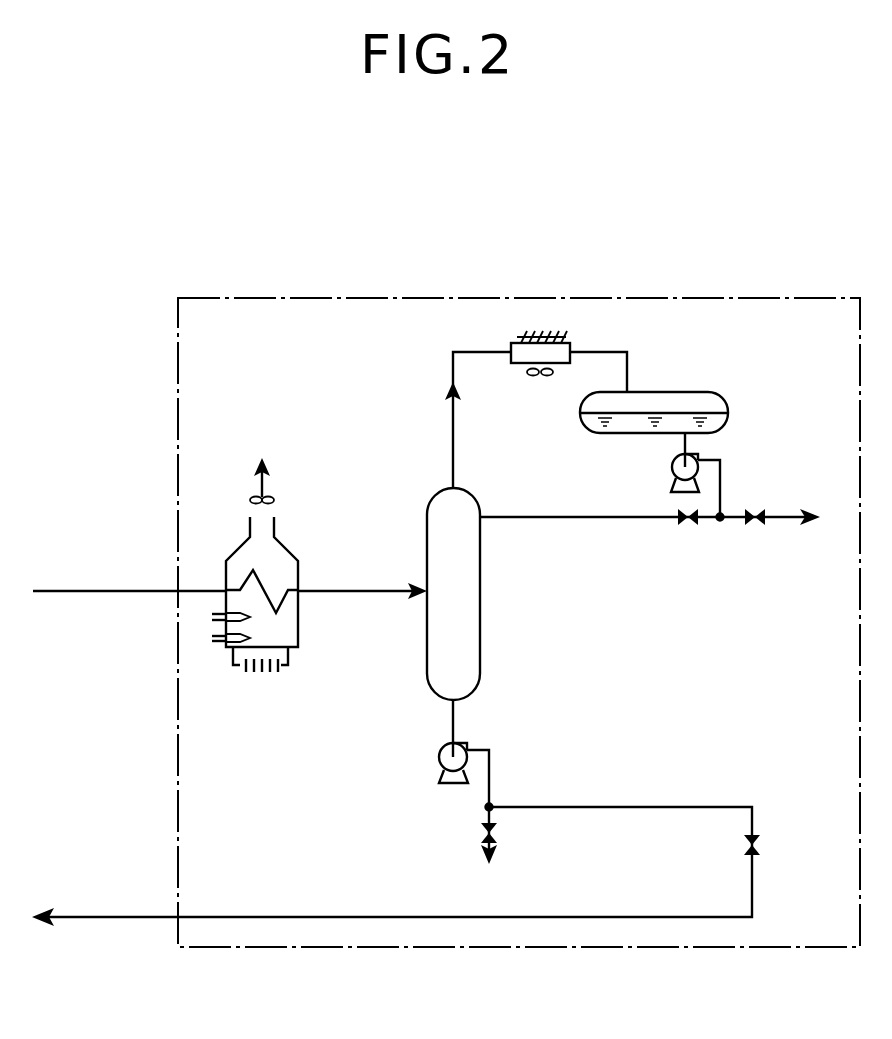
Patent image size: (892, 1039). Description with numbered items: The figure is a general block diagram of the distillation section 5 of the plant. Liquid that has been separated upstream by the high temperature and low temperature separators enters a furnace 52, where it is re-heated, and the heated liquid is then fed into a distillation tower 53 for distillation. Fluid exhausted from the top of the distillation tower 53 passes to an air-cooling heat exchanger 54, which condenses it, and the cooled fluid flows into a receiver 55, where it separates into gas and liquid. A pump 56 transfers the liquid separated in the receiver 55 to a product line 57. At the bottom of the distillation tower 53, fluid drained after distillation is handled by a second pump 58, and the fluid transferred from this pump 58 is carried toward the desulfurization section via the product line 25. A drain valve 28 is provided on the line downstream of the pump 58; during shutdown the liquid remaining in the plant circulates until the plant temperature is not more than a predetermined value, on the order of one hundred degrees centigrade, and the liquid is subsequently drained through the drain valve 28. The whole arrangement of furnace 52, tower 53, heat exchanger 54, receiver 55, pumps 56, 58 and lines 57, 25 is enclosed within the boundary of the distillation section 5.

The distillation section 5 is at (412, 282).
The product line 25 is at (405, 917).
The drain valve 28 is at (482, 828).
The furnace 52 is at (290, 550).
The distillation tower 53 is at (473, 612).
The air-cooling heat exchanger 54 is at (560, 334).
The receiver 55 is at (678, 392).
The pump 56 is at (668, 463).
The product line 57 is at (790, 513).
The pump 58 is at (438, 758).